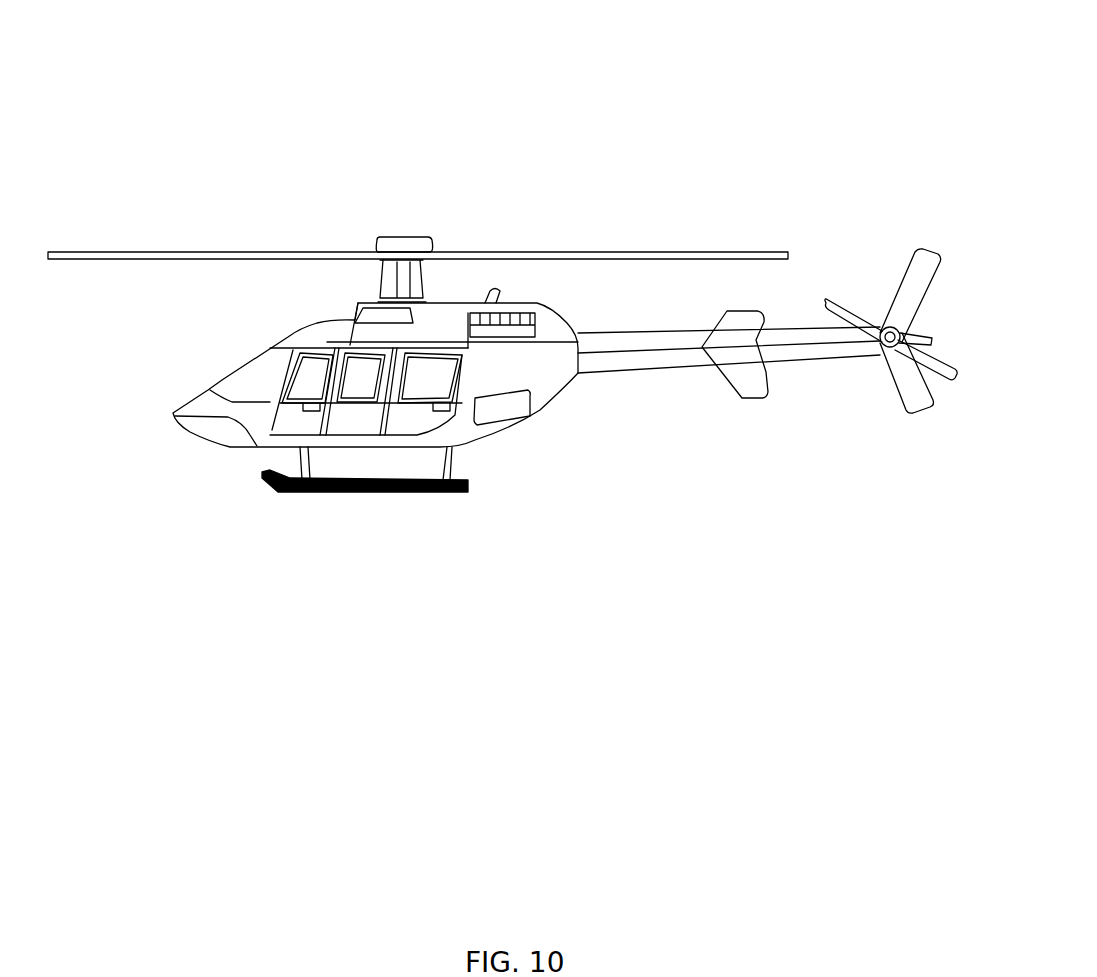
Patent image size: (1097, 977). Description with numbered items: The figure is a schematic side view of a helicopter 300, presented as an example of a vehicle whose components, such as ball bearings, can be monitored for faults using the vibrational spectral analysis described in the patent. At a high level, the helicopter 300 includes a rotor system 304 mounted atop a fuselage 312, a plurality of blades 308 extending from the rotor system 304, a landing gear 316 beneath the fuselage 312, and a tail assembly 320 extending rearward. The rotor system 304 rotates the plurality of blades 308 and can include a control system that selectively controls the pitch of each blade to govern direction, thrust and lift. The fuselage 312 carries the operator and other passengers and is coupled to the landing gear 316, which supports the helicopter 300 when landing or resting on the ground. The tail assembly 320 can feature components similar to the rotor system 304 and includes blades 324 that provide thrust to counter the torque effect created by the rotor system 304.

The helicopter 300 is at (628, 137).
The rotor system 304 is at (385, 195).
The plurality of blades 308 is at (145, 300).
The fuselage 312 is at (480, 446).
The landing gear 316 is at (400, 490).
The tail assembly 320 is at (873, 395).
The blades 324 is at (850, 283).